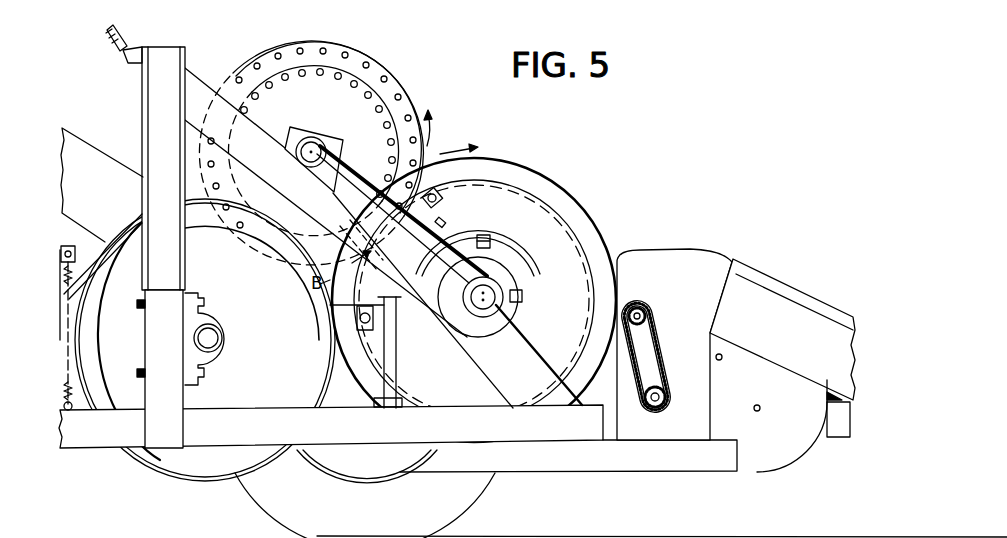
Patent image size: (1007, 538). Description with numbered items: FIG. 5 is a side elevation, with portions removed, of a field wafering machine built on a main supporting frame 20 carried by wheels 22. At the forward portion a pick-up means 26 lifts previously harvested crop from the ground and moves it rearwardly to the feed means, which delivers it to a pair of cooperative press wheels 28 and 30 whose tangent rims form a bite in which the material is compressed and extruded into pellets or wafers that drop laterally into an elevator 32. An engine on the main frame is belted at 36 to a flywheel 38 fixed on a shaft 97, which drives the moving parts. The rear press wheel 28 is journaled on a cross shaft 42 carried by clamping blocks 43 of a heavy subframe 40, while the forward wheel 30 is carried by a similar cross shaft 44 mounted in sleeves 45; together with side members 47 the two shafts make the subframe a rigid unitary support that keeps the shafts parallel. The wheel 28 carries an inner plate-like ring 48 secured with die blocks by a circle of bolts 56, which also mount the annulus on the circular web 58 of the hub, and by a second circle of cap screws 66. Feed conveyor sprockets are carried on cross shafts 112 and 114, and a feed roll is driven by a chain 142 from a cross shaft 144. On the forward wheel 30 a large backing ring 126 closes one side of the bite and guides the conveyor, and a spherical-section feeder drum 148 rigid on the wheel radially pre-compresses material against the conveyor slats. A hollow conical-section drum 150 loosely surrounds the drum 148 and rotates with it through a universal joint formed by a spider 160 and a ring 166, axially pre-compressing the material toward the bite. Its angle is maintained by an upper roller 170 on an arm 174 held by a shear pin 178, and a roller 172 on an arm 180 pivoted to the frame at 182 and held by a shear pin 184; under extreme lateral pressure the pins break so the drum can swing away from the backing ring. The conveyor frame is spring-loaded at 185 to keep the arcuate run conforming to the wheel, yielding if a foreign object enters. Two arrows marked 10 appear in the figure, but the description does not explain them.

The direction arrow 10 is at (421, 296).
The main supporting frame 20 is at (87, 448).
The wheels 22 is at (466, 503).
The pick-up means 26 is at (816, 297).
The press wheel 28 is at (338, 140).
The press wheel 30 is at (577, 208).
The elevator 32 is at (86, 141).
The belt 36 is at (88, 279).
The flywheel 38 is at (205, 340).
The subframe 40 is at (352, 198).
The cross shaft 42 is at (312, 145).
The clamping blocks 43 is at (292, 135).
The cross shaft 44 is at (478, 306).
The sleeves 45 is at (490, 310).
The side members 47 is at (398, 256).
The inner plate-like ring 48 is at (337, 45).
The circle of bolts 56 is at (375, 105).
The circular web 58 is at (292, 108).
The circle of cap screws 66 is at (411, 103).
The shaft 97 is at (212, 344).
The cross shaft 112 is at (760, 411).
The cross shaft 114 is at (722, 354).
The backing ring 126 is at (619, 259).
The chain 142 is at (650, 330).
The cross shaft 144 is at (657, 412).
The feeder drum 148 is at (590, 219).
The drum 150 is at (489, 292).
The spider 160 is at (504, 258).
The ring 166 is at (478, 232).
The upper roller 170 is at (442, 198).
The roller 172 is at (330, 304).
The arm 174 is at (364, 172).
The shear pin 178 is at (440, 224).
The arm 180 is at (384, 379).
The pivot 182 is at (367, 406).
The shear pin 184 is at (394, 352).
The spring loading 185 is at (72, 386).